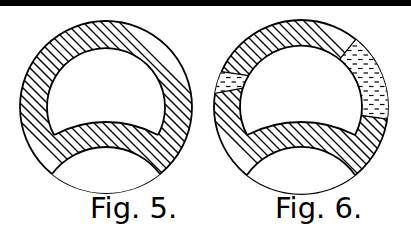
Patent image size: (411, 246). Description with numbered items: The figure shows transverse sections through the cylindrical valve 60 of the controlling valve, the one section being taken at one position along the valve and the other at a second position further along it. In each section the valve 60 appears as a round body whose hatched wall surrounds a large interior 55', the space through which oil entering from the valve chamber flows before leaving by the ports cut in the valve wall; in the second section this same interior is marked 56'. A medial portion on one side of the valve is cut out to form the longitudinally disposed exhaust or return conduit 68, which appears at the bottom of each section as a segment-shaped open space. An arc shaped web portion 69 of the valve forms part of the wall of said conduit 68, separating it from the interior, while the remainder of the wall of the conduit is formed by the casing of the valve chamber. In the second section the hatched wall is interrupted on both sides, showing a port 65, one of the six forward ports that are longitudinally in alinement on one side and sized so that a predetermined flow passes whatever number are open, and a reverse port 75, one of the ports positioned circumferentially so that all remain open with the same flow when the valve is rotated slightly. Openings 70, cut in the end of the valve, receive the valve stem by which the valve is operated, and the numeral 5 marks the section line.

In FIG. 5, the figure indicator 5 is at (75, 6).
In FIG. 5, the cylindrical valve 60 is at (58, 48).
In FIG. 6, the cylindrical valve 60 is at (252, 47).
In FIG. 5, the interior of the valve 55' is at (106, 91).
In FIG. 6, the inner cavity (FIG. 6) 56' is at (301, 90).
In FIG. 5, the arc shaped web portion 69 is at (108, 122).
In FIG. 6, the arc shaped web portion 69 is at (307, 122).
In FIG. 5, the exhaust or return conduit 68 is at (106, 170).
In FIG. 6, the exhaust or return conduit 68 is at (301, 170).
In FIG. 6, the port 65 is at (363, 65).
In FIG. 6, the reverse port 75 is at (226, 76).
In FIG. 6, the openings 70 is at (403, 100).